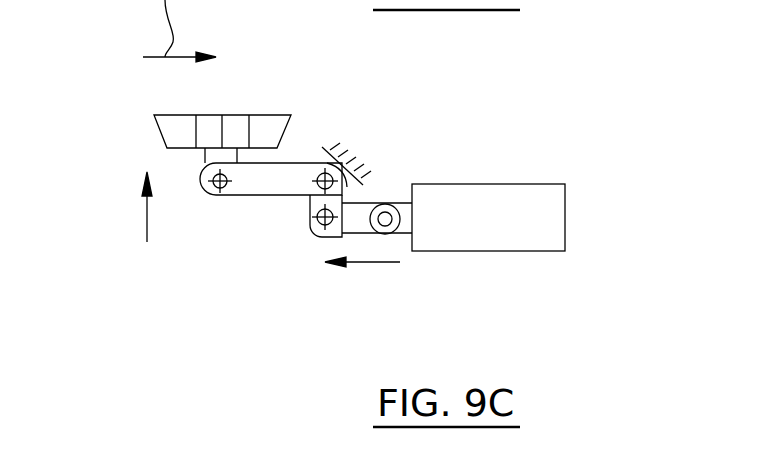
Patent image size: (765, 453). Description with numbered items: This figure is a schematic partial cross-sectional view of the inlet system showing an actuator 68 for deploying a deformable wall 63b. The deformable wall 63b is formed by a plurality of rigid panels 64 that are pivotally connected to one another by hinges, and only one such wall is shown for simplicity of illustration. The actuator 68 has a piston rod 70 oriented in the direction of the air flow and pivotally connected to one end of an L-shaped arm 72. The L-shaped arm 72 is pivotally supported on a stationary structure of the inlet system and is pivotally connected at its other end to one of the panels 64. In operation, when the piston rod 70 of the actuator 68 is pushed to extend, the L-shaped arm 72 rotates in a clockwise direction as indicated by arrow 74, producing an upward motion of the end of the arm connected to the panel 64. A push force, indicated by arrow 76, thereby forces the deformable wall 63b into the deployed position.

The deformable wall 63b is at (263, 115).
The panel 64 is at (182, 150).
The actuator 68 is at (523, 251).
The piston rod 70 is at (388, 203).
The L-shaped arm 72 is at (228, 197).
The arrow 74 is at (306, 233).
The arrow 76 is at (147, 205).